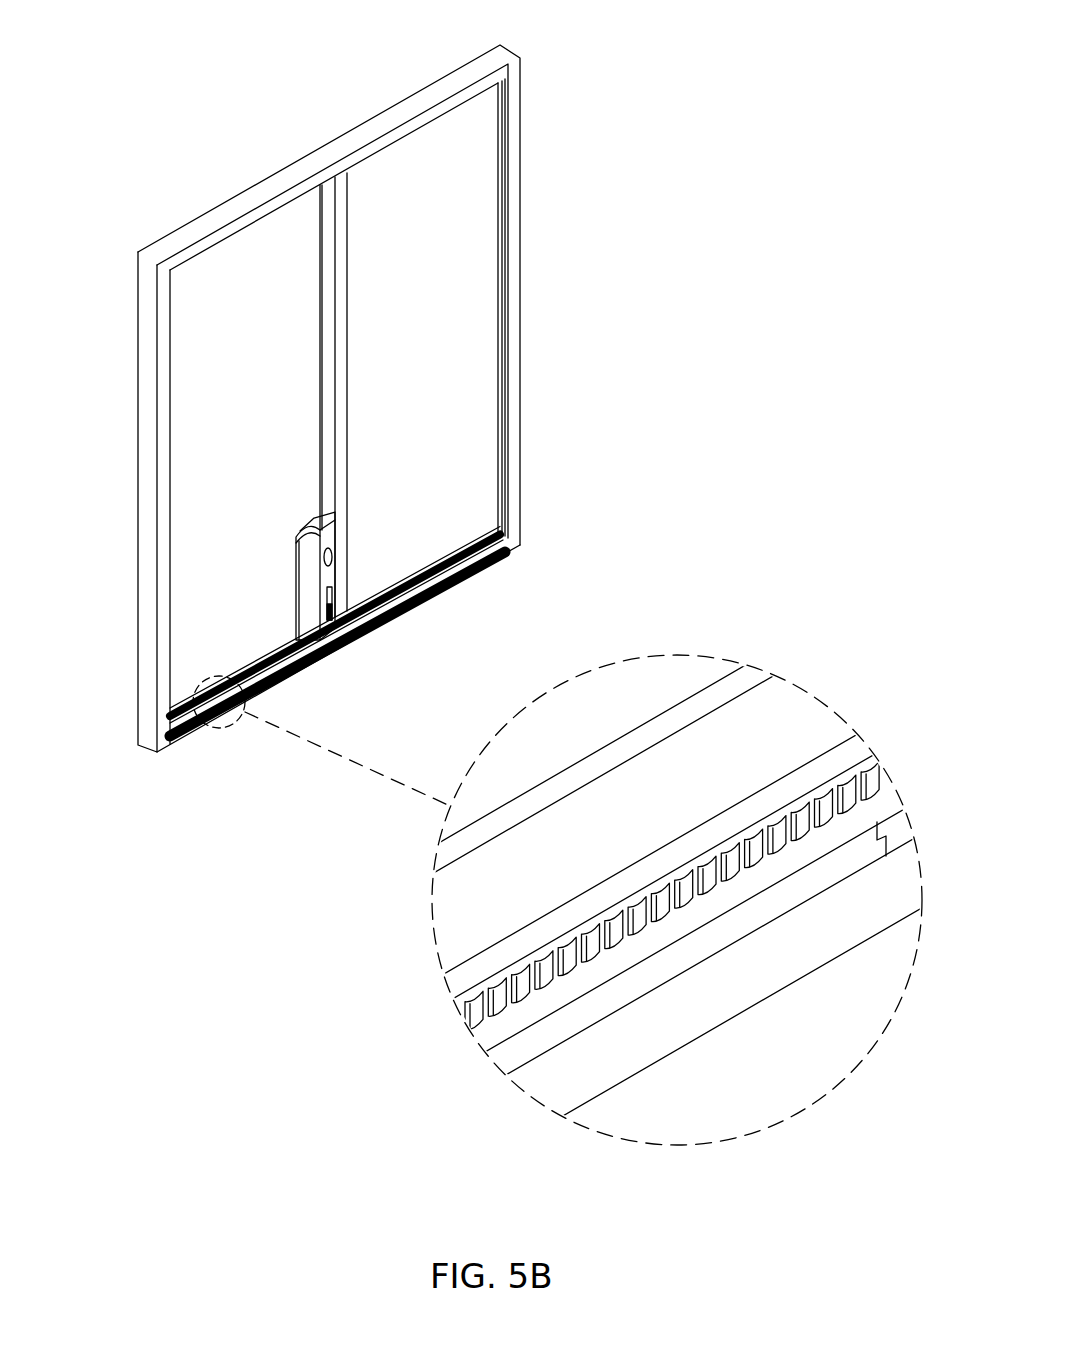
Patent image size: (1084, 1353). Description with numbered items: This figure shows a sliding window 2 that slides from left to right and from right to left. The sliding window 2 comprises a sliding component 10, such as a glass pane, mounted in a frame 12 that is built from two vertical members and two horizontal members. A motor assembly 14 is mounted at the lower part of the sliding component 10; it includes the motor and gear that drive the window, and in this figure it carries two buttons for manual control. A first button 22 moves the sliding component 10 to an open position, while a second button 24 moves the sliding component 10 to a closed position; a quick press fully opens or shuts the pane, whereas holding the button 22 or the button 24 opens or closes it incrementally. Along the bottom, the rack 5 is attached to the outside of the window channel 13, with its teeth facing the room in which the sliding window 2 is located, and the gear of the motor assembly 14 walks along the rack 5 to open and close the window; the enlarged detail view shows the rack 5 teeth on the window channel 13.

The sliding window 2 is at (517, 56).
The frame 12 is at (152, 250).
The sliding component 10 is at (438, 288).
The window channel 13 is at (470, 903).
The rack 5 is at (523, 972).
The motor assembly 14 is at (298, 562).
The first button 22 is at (329, 562).
The second button 24 is at (332, 615).